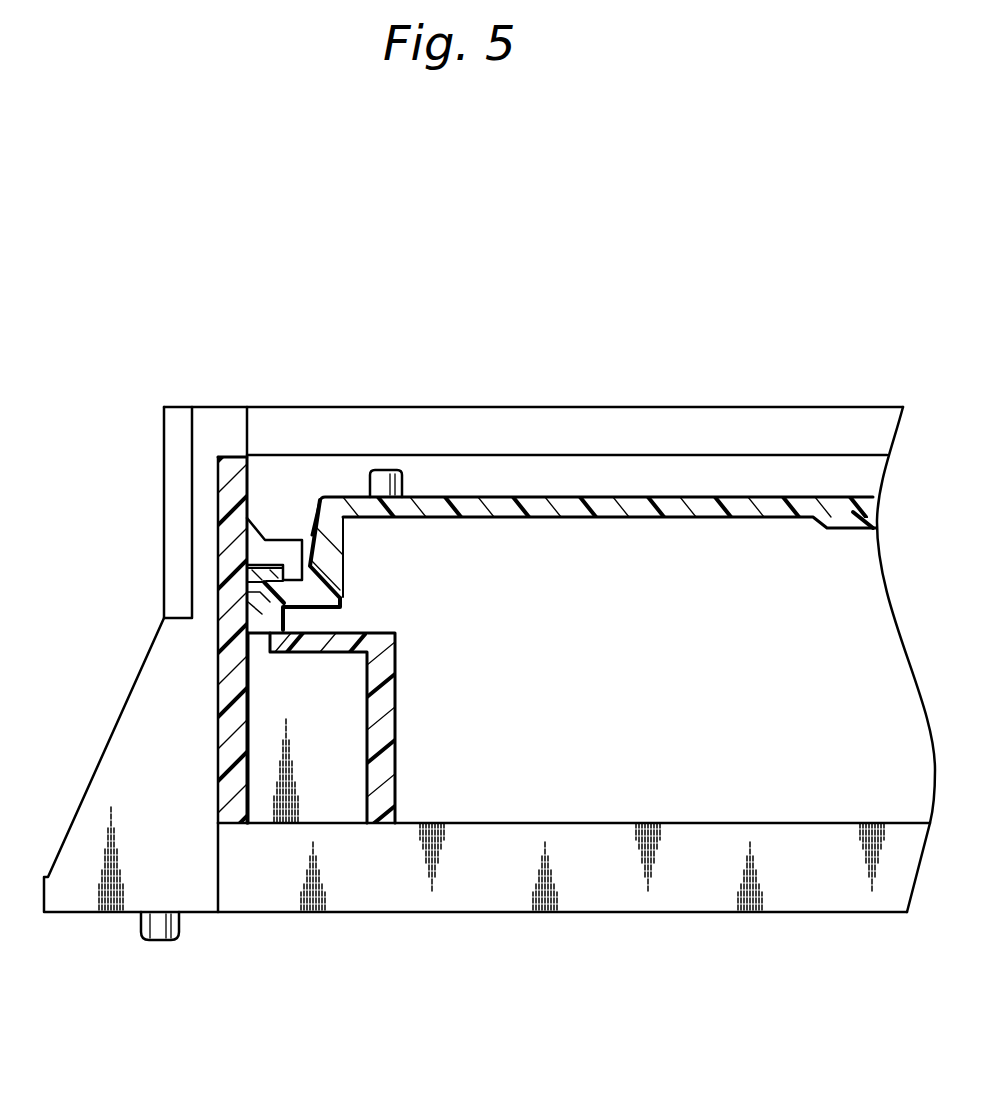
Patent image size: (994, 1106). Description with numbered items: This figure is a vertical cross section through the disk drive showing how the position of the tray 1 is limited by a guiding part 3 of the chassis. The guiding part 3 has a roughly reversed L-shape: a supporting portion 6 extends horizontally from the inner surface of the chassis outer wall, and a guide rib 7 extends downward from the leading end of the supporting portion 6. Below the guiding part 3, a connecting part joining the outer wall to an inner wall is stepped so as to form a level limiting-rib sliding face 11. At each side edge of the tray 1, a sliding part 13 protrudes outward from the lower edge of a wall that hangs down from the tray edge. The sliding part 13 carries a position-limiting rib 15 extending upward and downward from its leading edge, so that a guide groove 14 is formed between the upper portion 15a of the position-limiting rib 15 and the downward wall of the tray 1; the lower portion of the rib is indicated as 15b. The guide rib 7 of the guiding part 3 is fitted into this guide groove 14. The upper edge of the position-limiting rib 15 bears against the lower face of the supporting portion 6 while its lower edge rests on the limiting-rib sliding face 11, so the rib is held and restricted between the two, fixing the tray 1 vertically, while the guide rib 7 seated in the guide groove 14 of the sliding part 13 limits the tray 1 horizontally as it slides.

The tray 1 is at (661, 507).
The guiding part 3 is at (281, 516).
The supporting portion 6 is at (262, 553).
The guide rib 7 is at (324, 558).
The limiting-rib sliding face 11 is at (240, 612).
The sliding part 13 is at (304, 620).
The guide groove 14 is at (346, 592).
The position-limiting rib 15 is at (183, 588).
The upper portion of the position-limiting rib 15a is at (262, 575).
The lower arm of clip 15b is at (176, 618).